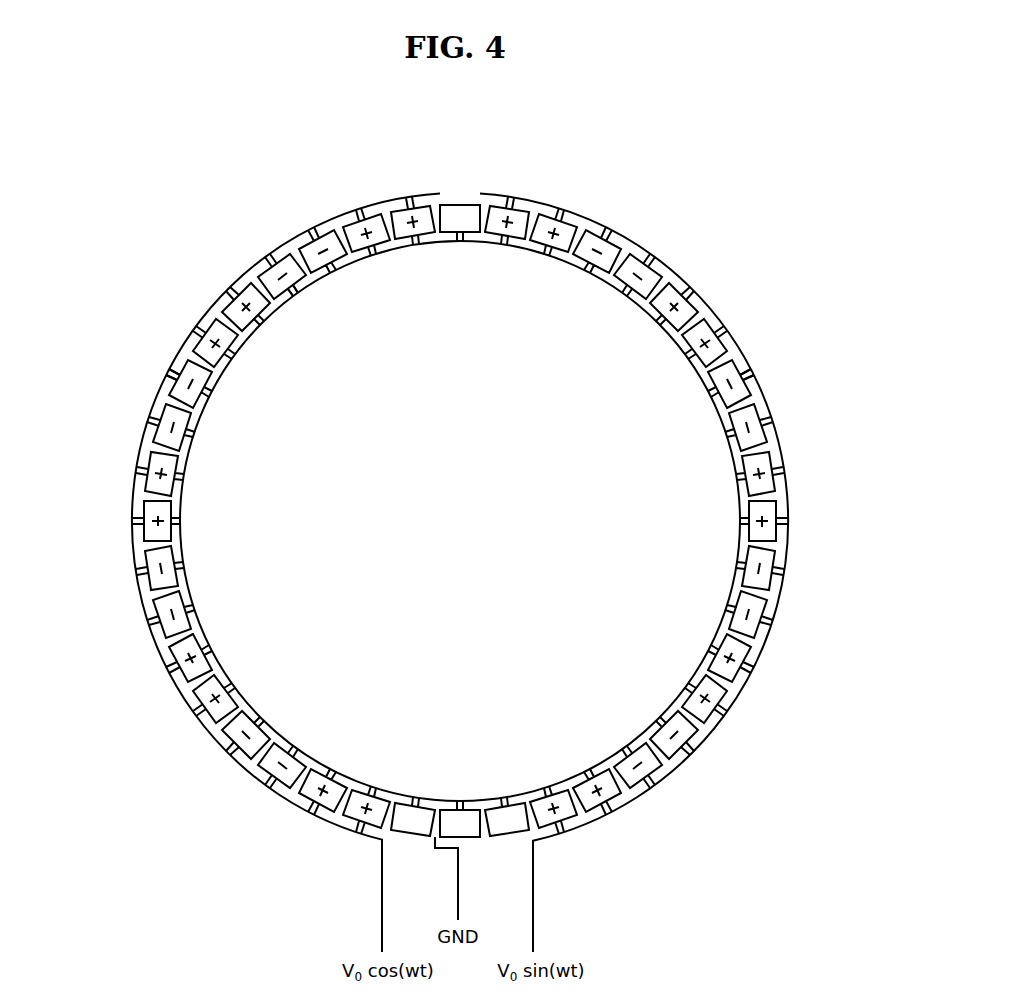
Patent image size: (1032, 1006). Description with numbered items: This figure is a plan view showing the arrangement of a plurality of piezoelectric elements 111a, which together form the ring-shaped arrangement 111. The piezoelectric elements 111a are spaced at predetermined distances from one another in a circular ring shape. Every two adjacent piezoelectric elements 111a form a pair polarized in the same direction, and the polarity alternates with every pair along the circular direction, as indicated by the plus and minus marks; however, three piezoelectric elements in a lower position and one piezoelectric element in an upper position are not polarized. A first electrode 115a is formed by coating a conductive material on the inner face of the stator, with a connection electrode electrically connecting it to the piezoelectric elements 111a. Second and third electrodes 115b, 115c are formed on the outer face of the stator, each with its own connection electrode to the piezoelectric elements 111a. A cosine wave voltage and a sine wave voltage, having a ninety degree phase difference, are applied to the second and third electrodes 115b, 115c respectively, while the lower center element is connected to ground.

The angular position sensor ring / stator 111 is at (700, 313).
The piezoelectric element 111a is at (780, 450).
The first electrode 115a is at (277, 308).
The second electrode 115b is at (162, 390).
The third electrode 115c is at (762, 388).